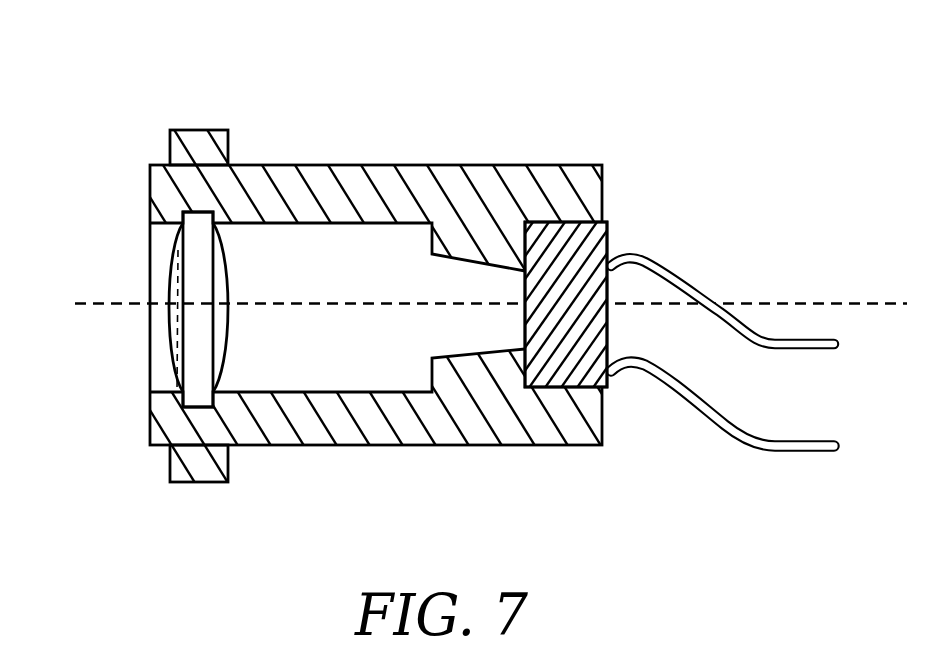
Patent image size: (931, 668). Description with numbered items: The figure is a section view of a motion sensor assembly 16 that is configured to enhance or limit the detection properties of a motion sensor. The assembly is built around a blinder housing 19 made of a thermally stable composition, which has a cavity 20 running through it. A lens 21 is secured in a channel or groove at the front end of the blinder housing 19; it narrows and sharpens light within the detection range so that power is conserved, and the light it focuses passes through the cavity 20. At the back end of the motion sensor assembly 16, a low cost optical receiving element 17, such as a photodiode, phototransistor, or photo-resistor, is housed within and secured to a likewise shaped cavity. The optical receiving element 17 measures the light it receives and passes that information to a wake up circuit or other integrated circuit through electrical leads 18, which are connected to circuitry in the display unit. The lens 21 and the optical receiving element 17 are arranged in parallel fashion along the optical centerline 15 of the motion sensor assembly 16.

The optical centerline 15 is at (491, 280).
The motion sensor assembly 16 is at (453, 297).
The optical receiving element 17 is at (608, 233).
The electrical leads 18 is at (712, 298).
The blinder housing 19 is at (283, 185).
The cavity 20 is at (337, 309).
The lens 21 is at (171, 259).